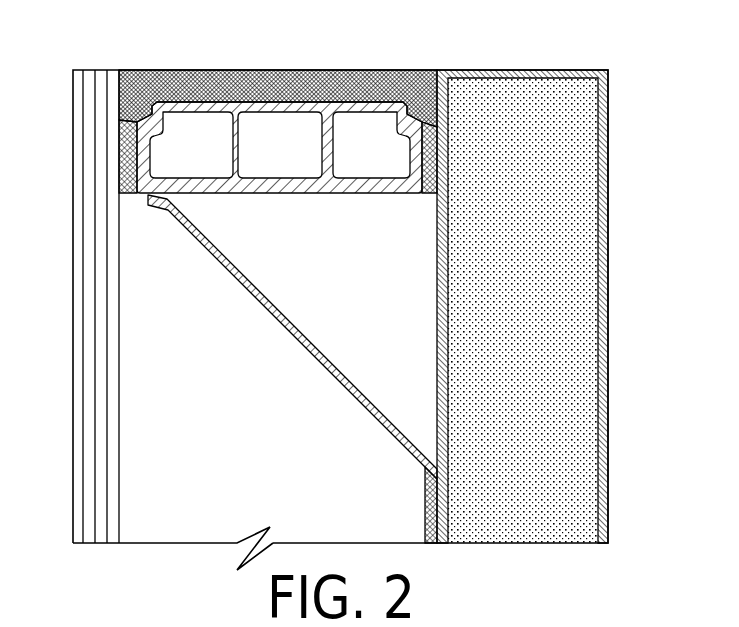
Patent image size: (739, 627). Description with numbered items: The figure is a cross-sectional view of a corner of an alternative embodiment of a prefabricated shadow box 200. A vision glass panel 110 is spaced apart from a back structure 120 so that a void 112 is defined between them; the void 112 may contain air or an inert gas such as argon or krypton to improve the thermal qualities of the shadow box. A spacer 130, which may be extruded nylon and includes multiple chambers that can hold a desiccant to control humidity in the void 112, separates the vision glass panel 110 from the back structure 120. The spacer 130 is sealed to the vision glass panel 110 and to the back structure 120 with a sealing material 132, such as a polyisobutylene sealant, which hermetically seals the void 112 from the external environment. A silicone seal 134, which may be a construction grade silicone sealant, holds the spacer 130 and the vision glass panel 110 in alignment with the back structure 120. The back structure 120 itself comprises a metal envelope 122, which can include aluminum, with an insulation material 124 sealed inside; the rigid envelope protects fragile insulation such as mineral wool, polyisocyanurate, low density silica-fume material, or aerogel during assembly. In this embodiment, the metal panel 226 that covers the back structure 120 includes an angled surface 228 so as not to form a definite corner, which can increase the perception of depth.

The shadow box 200 is at (53, 63).
The vision glass panel 110 is at (82, 425).
The void 112 is at (223, 466).
The back structure 120 is at (553, 69).
The metal envelope 122 is at (627, 272).
The insulation material 124 is at (532, 366).
The spacer 130 is at (232, 111).
The sealing material 132 is at (122, 195).
The silicone seal 134 is at (330, 80).
The metal panel 226 is at (427, 503).
The angled surface 228 is at (353, 395).